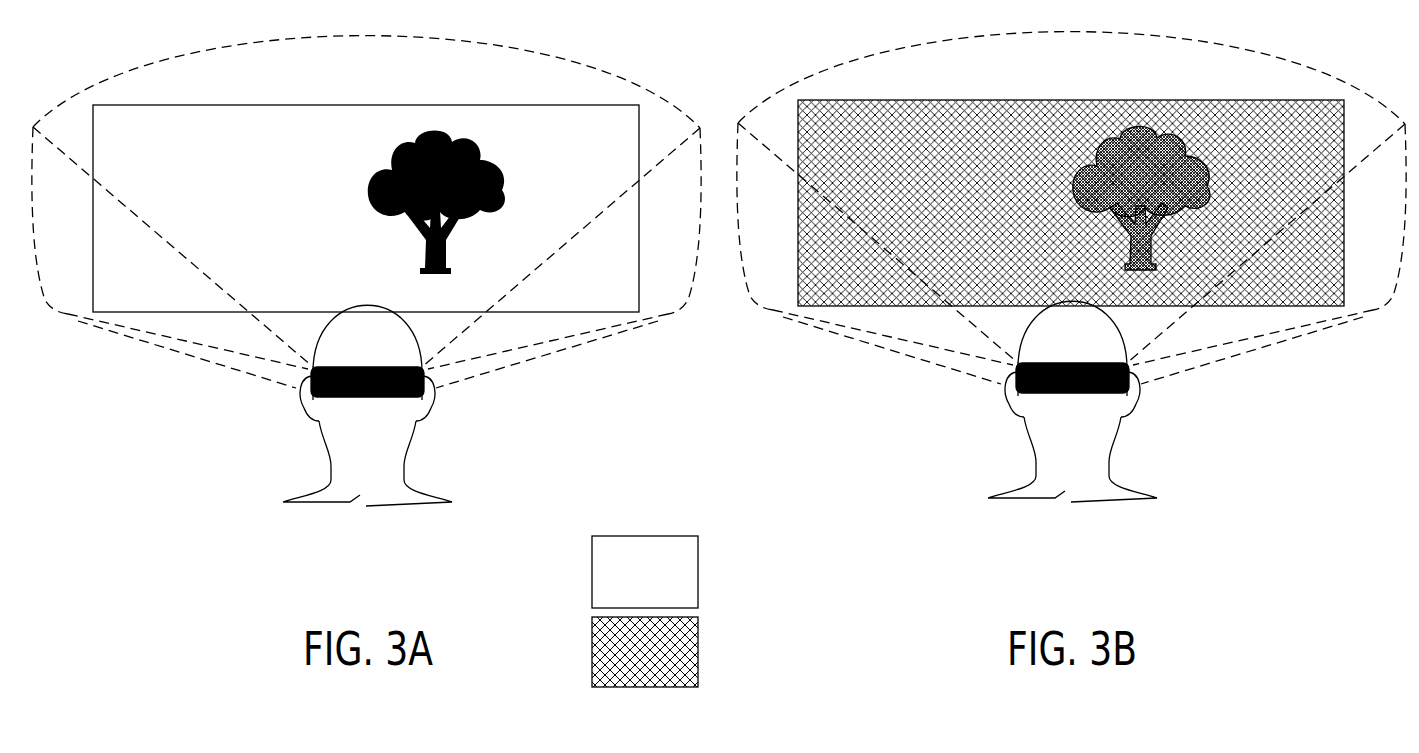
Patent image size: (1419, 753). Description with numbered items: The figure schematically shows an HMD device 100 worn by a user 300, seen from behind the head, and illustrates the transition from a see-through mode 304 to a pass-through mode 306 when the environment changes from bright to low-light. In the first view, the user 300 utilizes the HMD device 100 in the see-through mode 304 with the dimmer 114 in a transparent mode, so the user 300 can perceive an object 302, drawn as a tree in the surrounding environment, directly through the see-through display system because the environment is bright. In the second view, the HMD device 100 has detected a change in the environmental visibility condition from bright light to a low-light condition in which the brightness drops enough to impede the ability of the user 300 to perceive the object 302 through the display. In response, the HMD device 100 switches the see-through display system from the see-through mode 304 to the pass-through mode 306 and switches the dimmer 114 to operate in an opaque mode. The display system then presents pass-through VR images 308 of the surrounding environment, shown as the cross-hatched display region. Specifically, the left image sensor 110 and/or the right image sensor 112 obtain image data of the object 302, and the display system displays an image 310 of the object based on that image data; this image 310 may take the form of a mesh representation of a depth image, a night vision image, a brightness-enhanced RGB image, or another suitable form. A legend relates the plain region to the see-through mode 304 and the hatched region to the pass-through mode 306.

In FIG. 3A, the HMD device 100 is at (348, 366).
In FIG. 3B, the HMD device 100 is at (1072, 358).
In FIG. 3A, the left image sensor 110 is at (366, 292).
In FIG. 3B, the left image sensor 110 is at (1071, 286).
In FIG. 3A, the right image sensor 112 is at (264, 396).
In FIG. 3B, the right image sensor 112 is at (1071, 286).
In FIG. 3B, the dimmer 114 is at (1180, 398).
In FIG. 3A, the user 300 is at (380, 451).
In FIG. 3B, the user 300 is at (1072, 401).
In FIG. 3A, the object 302 is at (372, 200).
In FIG. 3B, the see-through mode 304 is at (731, 572).
In FIG. 3B, the pass-through mode 306 is at (734, 652).
In FIG. 3B, the pass-through VR images 308 is at (1071, 179).
In FIG. 3B, the image of the object 310 is at (1106, 196).